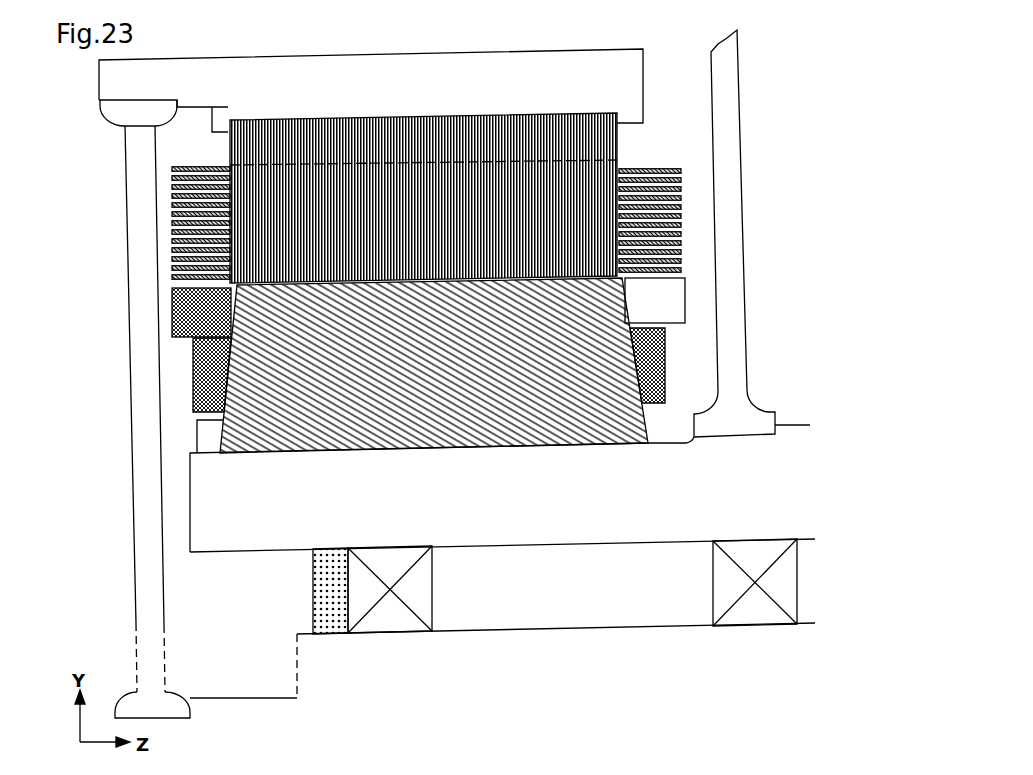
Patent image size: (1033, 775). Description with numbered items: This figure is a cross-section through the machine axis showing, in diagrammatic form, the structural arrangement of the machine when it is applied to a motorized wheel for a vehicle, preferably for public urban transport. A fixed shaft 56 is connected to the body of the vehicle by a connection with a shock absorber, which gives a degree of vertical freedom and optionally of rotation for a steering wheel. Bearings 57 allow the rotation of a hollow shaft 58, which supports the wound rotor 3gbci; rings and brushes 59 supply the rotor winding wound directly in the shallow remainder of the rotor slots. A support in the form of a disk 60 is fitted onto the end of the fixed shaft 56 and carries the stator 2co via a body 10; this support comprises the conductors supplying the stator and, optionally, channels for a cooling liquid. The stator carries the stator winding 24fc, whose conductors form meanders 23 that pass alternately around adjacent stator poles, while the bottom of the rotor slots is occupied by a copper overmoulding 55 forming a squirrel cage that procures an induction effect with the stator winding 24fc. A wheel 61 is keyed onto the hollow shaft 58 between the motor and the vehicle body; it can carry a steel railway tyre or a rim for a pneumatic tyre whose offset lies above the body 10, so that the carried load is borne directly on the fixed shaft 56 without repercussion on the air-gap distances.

The body 10 is at (618, 82).
The stator winding 24fc is at (680, 173).
The wheel 61 is at (735, 237).
The meanders 23 is at (685, 300).
The copper overmoulding 55 is at (663, 362).
The stator 2co is at (150, 194).
The wound rotor 3gbci is at (166, 370).
The support in the form of a disk 60 is at (148, 441).
The hollow shaft 58 is at (208, 517).
The bearings 57 is at (375, 587).
The rings and brushes 59 is at (328, 617).
The fixed shaft 56 is at (390, 690).